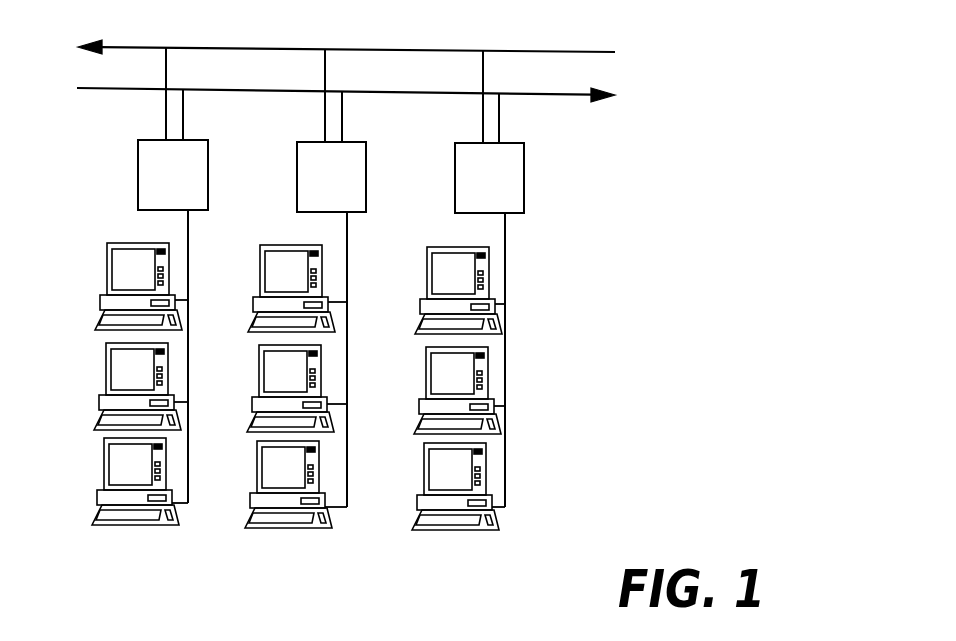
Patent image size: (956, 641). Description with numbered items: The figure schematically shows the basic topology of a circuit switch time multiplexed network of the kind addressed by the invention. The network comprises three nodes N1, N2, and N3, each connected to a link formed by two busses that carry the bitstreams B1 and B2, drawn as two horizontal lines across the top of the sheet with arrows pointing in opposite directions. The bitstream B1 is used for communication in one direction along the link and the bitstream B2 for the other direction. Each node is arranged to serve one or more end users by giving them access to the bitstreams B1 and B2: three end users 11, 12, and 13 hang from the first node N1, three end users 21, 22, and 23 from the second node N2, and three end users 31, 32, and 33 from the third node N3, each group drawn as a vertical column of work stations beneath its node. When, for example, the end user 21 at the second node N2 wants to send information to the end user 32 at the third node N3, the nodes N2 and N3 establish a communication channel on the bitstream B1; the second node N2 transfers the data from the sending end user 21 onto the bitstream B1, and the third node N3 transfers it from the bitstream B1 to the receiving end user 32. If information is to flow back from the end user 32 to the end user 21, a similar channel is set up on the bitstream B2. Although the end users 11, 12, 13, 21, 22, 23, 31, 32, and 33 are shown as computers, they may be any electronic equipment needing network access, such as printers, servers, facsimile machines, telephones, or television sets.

The bitstream B1 is at (356, 130).
The bitstream B2 is at (352, 78).
The first node N1 is at (167, 189).
The second node N2 is at (333, 191).
The third node N3 is at (498, 193).
The end user 11 is at (137, 272).
The end user 12 is at (135, 370).
The end user 13 is at (135, 468).
The end user 21 is at (290, 273).
The end user 22 is at (290, 372).
The end user 23 is at (288, 470).
The end user 31 is at (457, 275).
The end user 32 is at (443, 374).
The end user 33 is at (442, 472).